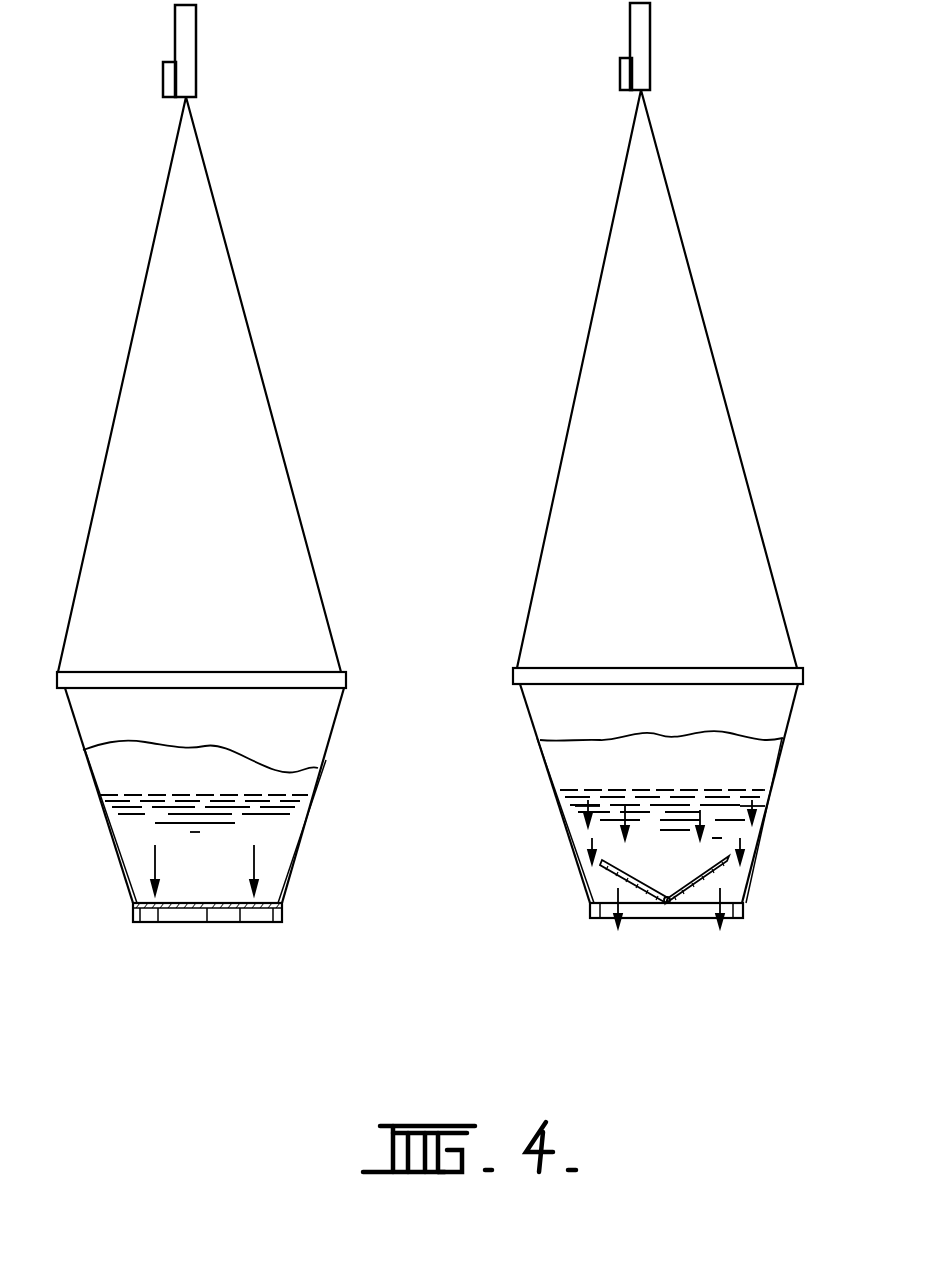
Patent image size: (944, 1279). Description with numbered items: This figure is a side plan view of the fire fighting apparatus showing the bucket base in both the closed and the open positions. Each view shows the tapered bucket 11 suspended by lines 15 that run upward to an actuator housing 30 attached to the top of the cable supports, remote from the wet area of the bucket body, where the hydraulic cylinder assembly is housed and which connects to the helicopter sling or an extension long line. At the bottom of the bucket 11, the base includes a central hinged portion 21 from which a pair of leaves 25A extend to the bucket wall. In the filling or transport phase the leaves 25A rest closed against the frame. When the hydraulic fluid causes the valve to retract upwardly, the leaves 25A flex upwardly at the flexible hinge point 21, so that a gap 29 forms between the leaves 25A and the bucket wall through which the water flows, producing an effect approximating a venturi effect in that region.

The actuator housing 30 is at (190, 62).
The lines 15 is at (553, 490).
The tapered bucket 11 is at (523, 727).
The leaves 25A is at (158, 910).
The central hinged portion 21 is at (207, 912).
The gap 29 is at (600, 888).